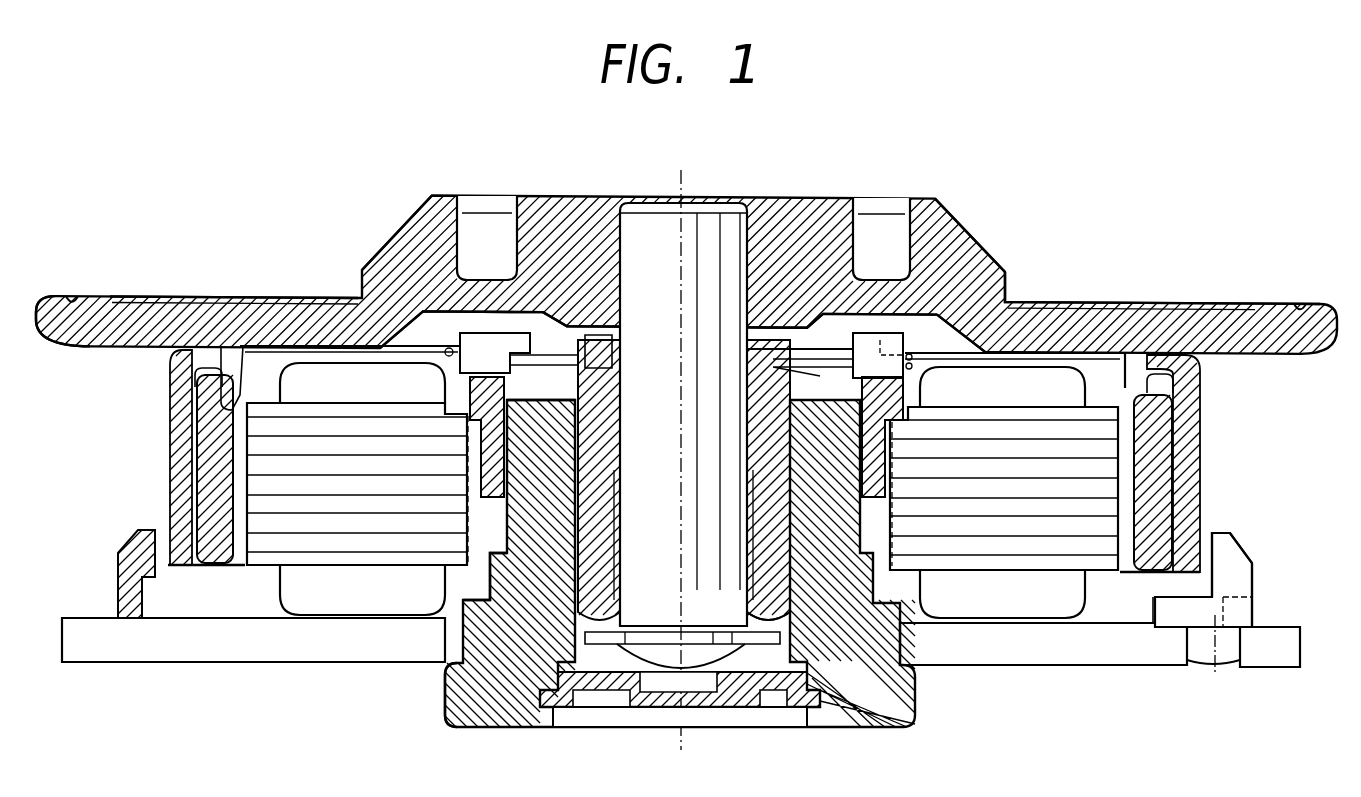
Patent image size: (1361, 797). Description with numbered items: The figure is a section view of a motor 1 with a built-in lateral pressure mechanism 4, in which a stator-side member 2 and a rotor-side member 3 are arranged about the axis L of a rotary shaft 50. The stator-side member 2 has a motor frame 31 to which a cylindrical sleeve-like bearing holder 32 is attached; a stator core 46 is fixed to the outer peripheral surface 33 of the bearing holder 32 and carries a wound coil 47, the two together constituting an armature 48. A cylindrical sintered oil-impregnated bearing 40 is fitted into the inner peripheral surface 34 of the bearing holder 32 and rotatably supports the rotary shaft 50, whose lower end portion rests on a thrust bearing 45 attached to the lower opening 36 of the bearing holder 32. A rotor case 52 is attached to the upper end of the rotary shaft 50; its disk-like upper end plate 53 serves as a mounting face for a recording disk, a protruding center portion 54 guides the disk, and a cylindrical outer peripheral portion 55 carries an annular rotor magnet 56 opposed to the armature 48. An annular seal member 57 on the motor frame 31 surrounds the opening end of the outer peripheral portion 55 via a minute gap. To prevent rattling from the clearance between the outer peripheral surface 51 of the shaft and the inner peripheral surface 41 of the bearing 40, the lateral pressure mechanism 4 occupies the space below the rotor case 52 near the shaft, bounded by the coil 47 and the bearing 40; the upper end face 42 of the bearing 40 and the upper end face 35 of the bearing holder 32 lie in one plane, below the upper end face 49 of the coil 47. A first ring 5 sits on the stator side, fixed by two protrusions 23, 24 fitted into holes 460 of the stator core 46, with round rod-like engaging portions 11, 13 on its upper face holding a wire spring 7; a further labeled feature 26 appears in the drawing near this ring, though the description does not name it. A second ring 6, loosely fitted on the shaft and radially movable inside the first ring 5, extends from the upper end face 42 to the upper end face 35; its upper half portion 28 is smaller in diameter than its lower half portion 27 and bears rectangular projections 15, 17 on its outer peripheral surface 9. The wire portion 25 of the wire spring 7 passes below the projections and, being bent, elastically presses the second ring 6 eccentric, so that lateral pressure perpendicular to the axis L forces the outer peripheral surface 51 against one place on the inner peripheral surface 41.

The motor 1 is at (1178, 152).
The stator-side member 2 is at (657, 645).
The rotor-side member 3 is at (205, 290).
The lateral pressure mechanism 4 is at (872, 333).
The first ring 5 is at (1000, 322).
The second ring 6 is at (765, 345).
The wire spring 7 is at (895, 350).
The outer peripheral surface 9 is at (567, 367).
The engaging portion 11 is at (957, 255).
The engaging portion 13 is at (463, 337).
The rectangular projection 15 is at (793, 360).
The rectangular projection 17 is at (598, 345).
The protrusion 23 is at (468, 473).
The protrusion 24 is at (883, 503).
The wire portion 25 is at (867, 345).
The hub slant wall 26 is at (975, 335).
The lower half portion 27 is at (535, 362).
The upper half portion 28 is at (612, 368).
The motor frame 31 is at (370, 648).
The bearing holder 32 is at (470, 713).
The outer peripheral surface 33 is at (920, 610).
The inner peripheral surface 34 is at (767, 650).
The upper end face 35 is at (460, 393).
The lower opening 36 is at (668, 718).
The bearing 40 is at (595, 600).
The inner peripheral surface 41 is at (743, 495).
The upper end face 42 is at (541, 437).
The thrust bearing 45 is at (705, 710).
The stator core 46 is at (1032, 556).
The coil 47 is at (1098, 595).
The armature 48 is at (1165, 714).
The upper end face 49 is at (1027, 372).
The rotary shaft 50 is at (718, 262).
The outer peripheral surface 51 is at (752, 447).
The rotor case 52 is at (322, 312).
The upper end plate 53 is at (100, 298).
The center portion 54 is at (430, 212).
The outer peripheral portion 55 is at (1187, 440).
The rotor magnet 56 is at (1166, 478).
The seal member 57 is at (1237, 582).
The hole 460 is at (915, 482).
The axis L is at (688, 192).